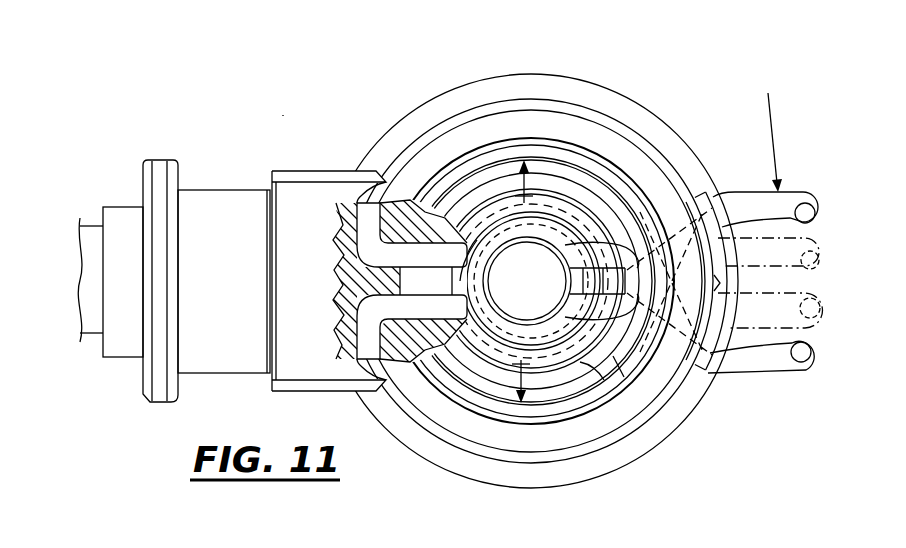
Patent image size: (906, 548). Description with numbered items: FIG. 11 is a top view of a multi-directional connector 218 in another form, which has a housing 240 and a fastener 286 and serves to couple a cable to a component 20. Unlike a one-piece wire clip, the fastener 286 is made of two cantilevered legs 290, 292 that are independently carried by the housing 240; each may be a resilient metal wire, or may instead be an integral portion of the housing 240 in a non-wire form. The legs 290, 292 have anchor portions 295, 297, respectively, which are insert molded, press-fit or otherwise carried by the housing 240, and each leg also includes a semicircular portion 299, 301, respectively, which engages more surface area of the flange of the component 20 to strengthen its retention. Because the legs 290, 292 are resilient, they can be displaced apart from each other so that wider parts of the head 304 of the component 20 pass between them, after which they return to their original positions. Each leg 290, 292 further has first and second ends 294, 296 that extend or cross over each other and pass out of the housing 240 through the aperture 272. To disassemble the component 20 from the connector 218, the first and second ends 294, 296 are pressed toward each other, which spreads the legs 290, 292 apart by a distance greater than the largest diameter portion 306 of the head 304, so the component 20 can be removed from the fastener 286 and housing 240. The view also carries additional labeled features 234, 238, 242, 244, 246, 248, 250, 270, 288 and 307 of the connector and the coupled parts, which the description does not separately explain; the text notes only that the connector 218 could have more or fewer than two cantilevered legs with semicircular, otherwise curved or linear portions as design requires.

The component 20 is at (484, 240).
The multi-directional connector 218 is at (279, 110).
The cable 234 is at (93, 225).
The nut 238 is at (125, 207).
The housing 240 is at (212, 188).
The flange 242 is at (145, 170).
The housing 244 is at (594, 83).
The housing wall 246 is at (624, 377).
The housing ring 248 is at (604, 380).
The bore 250 is at (527, 353).
The axis 270 is at (720, 283).
The aperture 272 is at (711, 198).
The fastener 286 is at (787, 246).
The groove 288 is at (512, 207).
The cantilevered leg 290 is at (503, 327).
The cantilevered leg 292 is at (514, 208).
The first end 294 is at (815, 198).
The anchor portion 295 is at (341, 338).
The second end 296 is at (803, 367).
The anchor portion 297 is at (345, 228).
The semicircular portion 299 is at (493, 323).
The semicircular portion 301 is at (569, 222).
The head 304 is at (577, 215).
The largest diameter portion 306 is at (588, 250).
The opening 307 is at (517, 287).